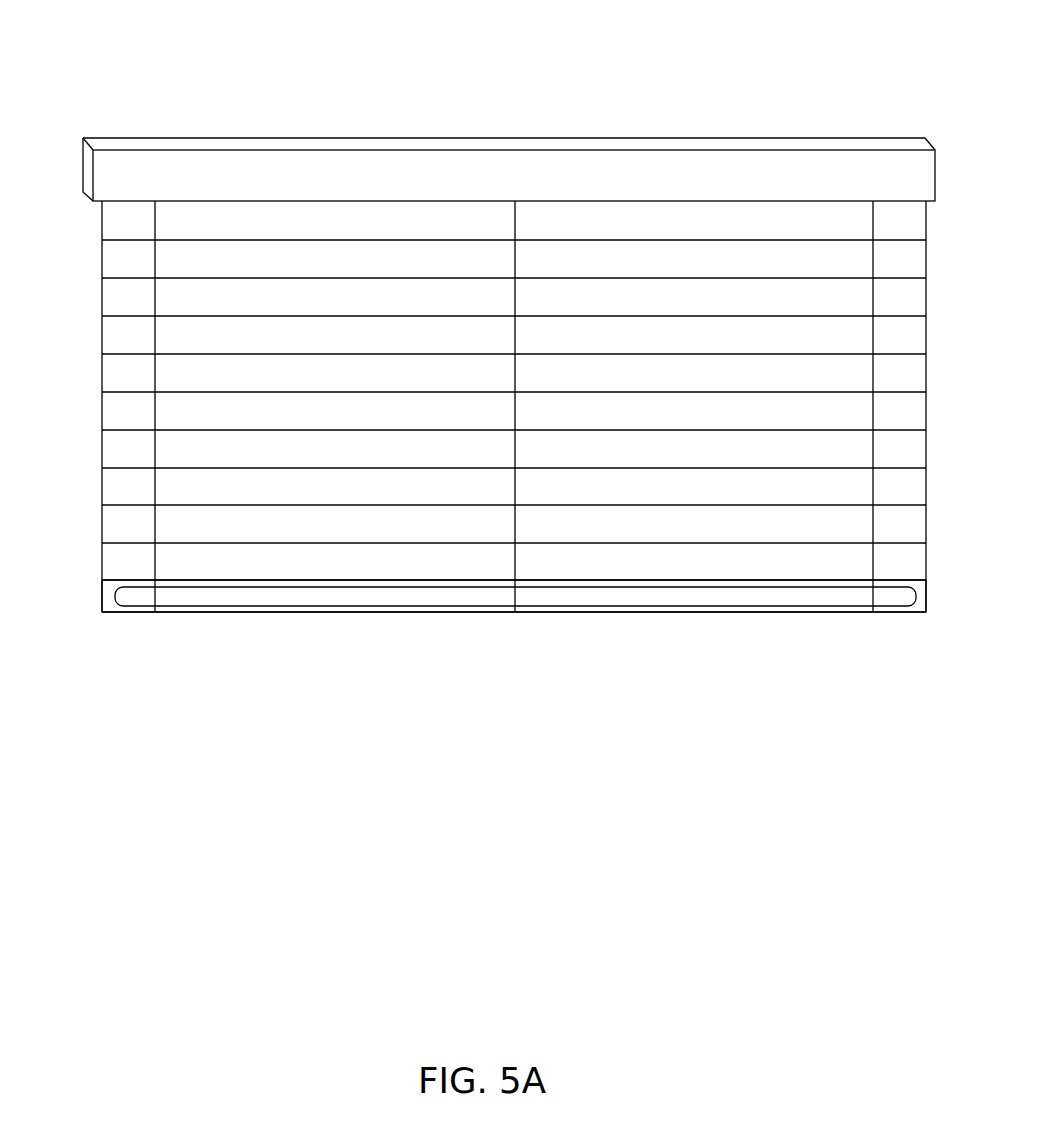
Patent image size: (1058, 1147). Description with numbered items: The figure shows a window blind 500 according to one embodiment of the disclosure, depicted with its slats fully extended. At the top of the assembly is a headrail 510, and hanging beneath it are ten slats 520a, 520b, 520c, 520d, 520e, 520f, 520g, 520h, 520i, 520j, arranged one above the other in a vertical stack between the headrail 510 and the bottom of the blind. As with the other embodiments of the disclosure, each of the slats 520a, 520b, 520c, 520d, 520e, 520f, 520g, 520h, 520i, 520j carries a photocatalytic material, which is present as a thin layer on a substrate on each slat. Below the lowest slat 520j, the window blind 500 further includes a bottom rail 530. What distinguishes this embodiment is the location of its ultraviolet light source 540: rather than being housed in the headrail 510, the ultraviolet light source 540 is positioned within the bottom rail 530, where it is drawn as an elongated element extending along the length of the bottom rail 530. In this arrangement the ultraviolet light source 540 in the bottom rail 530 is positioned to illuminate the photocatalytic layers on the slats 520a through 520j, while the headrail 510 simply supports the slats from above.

The window blind 500 is at (165, 71).
The headrail 510 is at (807, 143).
The slat 520a is at (357, 235).
The slat 520b is at (357, 273).
The slat 520c is at (357, 311).
The slat 520d is at (357, 349).
The slat 520e is at (357, 387).
The slat 520f is at (350, 424).
The slat 520g is at (357, 462).
The slat 520h is at (357, 499).
The slat 520i is at (352, 537).
The slat 520j is at (352, 574).
The bottom rail 530 is at (97, 582).
The ultraviolet light source 540 is at (832, 598).